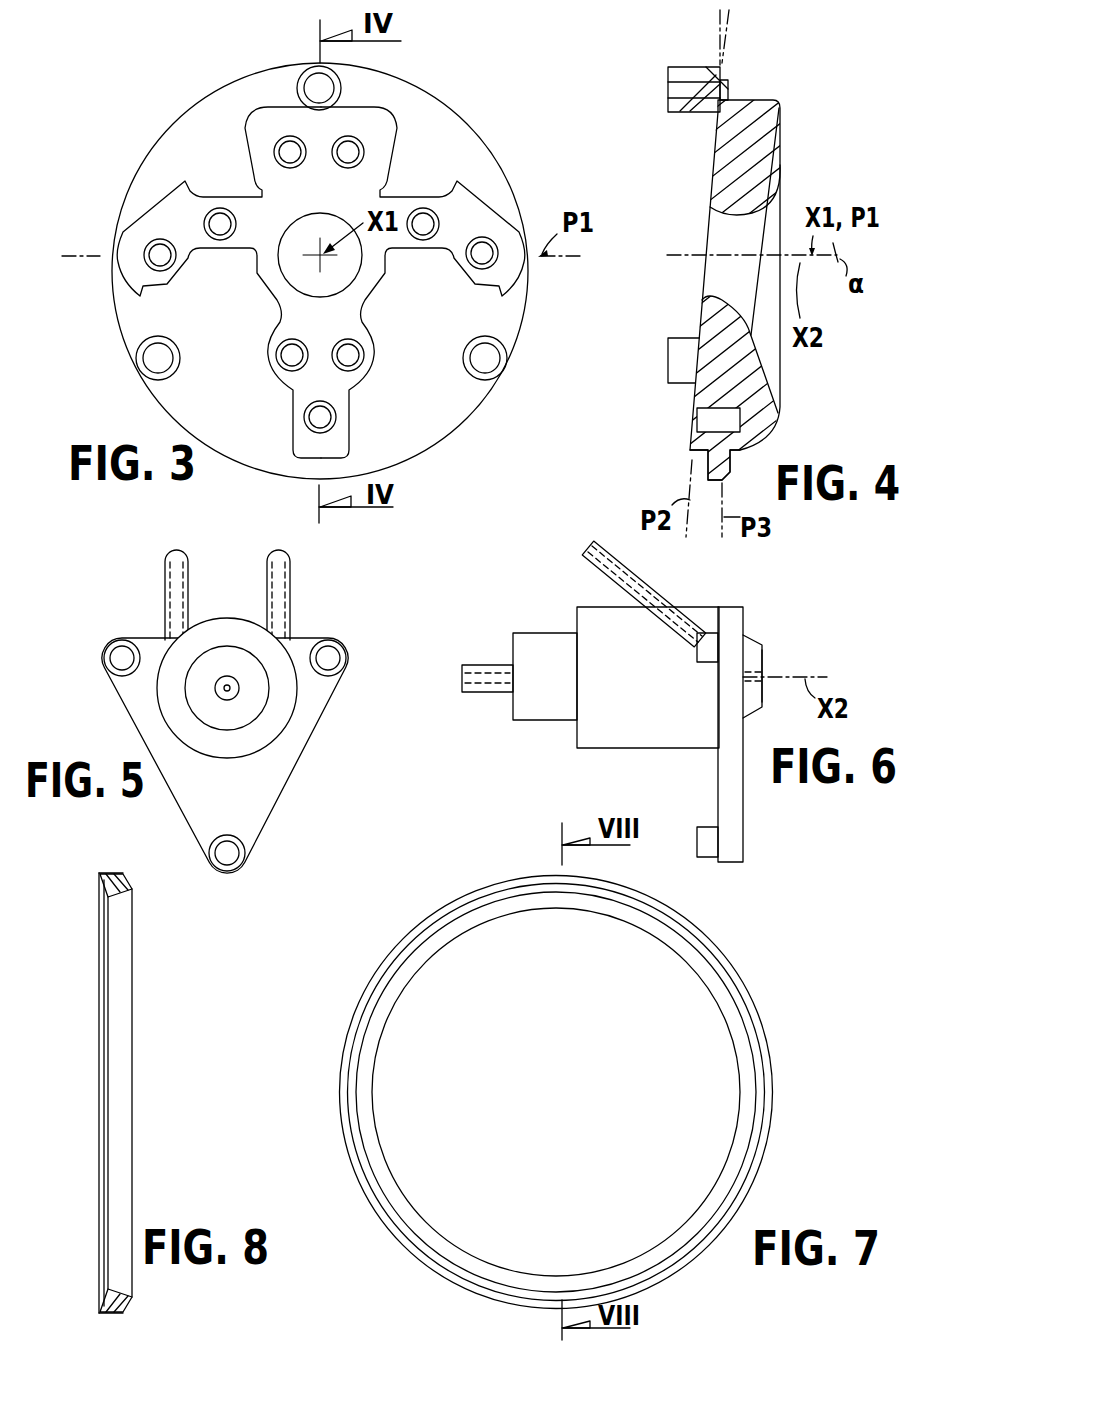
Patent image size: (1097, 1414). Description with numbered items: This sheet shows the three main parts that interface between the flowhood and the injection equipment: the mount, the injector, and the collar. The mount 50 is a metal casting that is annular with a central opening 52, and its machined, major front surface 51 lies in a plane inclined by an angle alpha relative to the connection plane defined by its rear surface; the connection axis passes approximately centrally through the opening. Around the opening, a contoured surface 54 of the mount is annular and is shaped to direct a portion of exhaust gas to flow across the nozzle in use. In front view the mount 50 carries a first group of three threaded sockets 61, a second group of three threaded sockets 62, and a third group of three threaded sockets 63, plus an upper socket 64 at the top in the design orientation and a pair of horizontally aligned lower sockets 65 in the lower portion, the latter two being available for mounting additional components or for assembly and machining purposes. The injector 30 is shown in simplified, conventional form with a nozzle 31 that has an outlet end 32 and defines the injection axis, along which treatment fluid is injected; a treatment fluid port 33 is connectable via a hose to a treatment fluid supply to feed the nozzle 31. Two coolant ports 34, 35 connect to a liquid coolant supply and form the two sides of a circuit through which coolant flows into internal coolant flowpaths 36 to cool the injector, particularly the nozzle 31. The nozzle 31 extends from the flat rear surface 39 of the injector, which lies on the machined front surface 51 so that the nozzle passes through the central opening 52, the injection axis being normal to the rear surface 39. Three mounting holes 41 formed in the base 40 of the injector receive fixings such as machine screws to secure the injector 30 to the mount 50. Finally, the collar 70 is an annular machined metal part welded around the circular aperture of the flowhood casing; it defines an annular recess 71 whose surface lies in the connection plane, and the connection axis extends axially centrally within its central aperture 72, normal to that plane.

In FIG. 5, the injector 30 is at (283, 773).
In FIG. 6, the injector 30 is at (554, 759).
In FIG. 6, the nozzle 31 is at (750, 640).
In FIG. 6, the outlet end 32 is at (772, 658).
In FIG. 5, the treatment fluid port 33 is at (232, 690).
In FIG. 6, the treatment fluid port 33 is at (463, 672).
In FIG. 5, the coolant port 34 is at (162, 546).
In FIG. 5, the coolant port 35 is at (291, 554).
In FIG. 6, the coolant port 35 is at (590, 543).
In FIG. 5, the internal coolant flowpaths 36 is at (190, 593).
In FIG. 6, the rear surface of the injector 39 is at (747, 790).
In FIG. 5, the base of the injector 40 is at (262, 812).
In FIG. 6, the base of the injector 40 is at (720, 785).
In FIG. 5, the mounting holes 41 is at (114, 646).
In FIG. 3, the mount 50 is at (462, 131).
In FIG. 4, the mount 50 is at (654, 413).
In FIG. 3, the machined front surface 51 is at (461, 211).
In FIG. 4, the machined front surface 51 is at (712, 210).
In FIG. 4, the central opening 52 is at (707, 279).
In FIG. 4, the contoured surface 54 is at (758, 367).
In FIG. 3, the first group of threaded sockets 61 is at (365, 152).
In FIG. 3, the second group of threaded sockets 62 is at (218, 208).
In FIG. 4, the second group of threaded sockets 62 is at (707, 423).
In FIG. 3, the third group of threaded sockets 63 is at (286, 137).
In FIG. 3, the upper socket 64 is at (334, 79).
In FIG. 4, the upper socket 64 is at (672, 83).
In FIG. 3, the lower sockets 65 is at (167, 377).
In FIG. 7, the collar 70 is at (551, 1092).
In FIG. 8, the collar 70 is at (116, 1093).
In FIG. 7, the annular recess 71 is at (722, 975).
In FIG. 8, the annular recess 71 is at (102, 918).
In FIG. 7, the central aperture 72 is at (412, 983).
In FIG. 8, the central aperture 72 is at (122, 905).